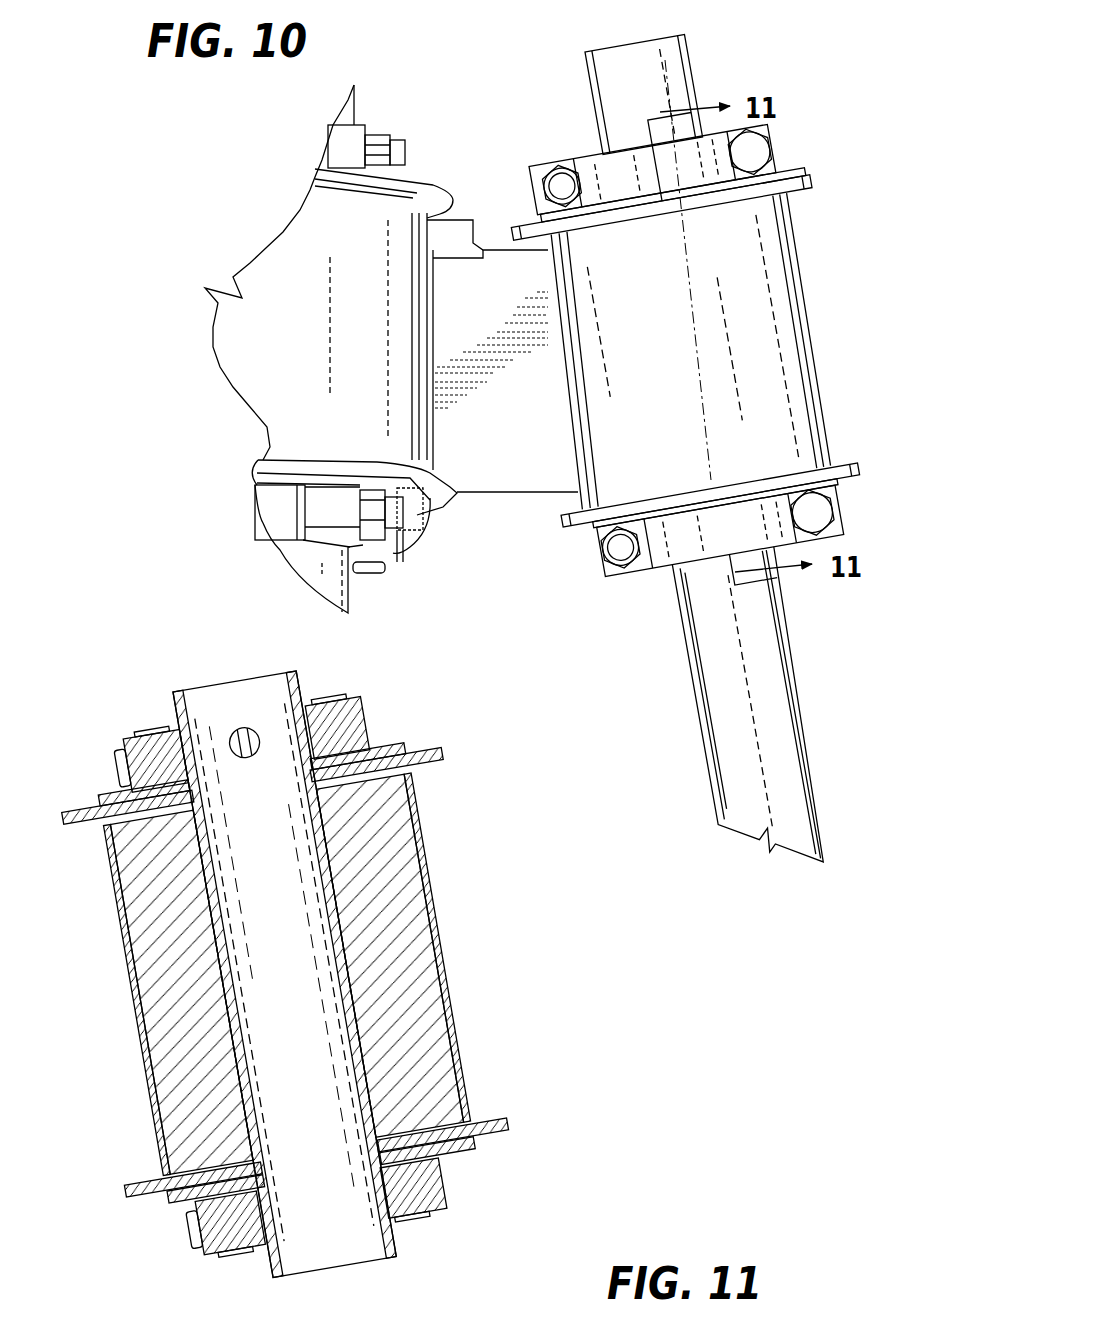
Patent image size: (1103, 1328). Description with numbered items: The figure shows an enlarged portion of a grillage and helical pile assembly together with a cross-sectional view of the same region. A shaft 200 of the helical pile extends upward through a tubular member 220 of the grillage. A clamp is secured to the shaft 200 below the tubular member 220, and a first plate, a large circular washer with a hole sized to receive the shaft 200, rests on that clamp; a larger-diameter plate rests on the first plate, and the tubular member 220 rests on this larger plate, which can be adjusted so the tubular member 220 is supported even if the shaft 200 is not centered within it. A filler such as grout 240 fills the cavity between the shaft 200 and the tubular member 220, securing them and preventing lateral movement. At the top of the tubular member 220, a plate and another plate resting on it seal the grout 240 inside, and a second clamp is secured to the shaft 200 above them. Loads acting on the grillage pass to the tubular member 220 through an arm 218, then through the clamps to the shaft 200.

In FIG. 10, the shaft 200 is at (668, 82).
In FIG. 11, the shaft 200 is at (400, 1245).
In FIG. 10, the arm 218 is at (510, 472).
In FIG. 10, the tubular member 220 is at (793, 325).
In FIG. 11, the tubular member 220 is at (432, 905).
In FIG. 11, the grout 240 is at (408, 998).